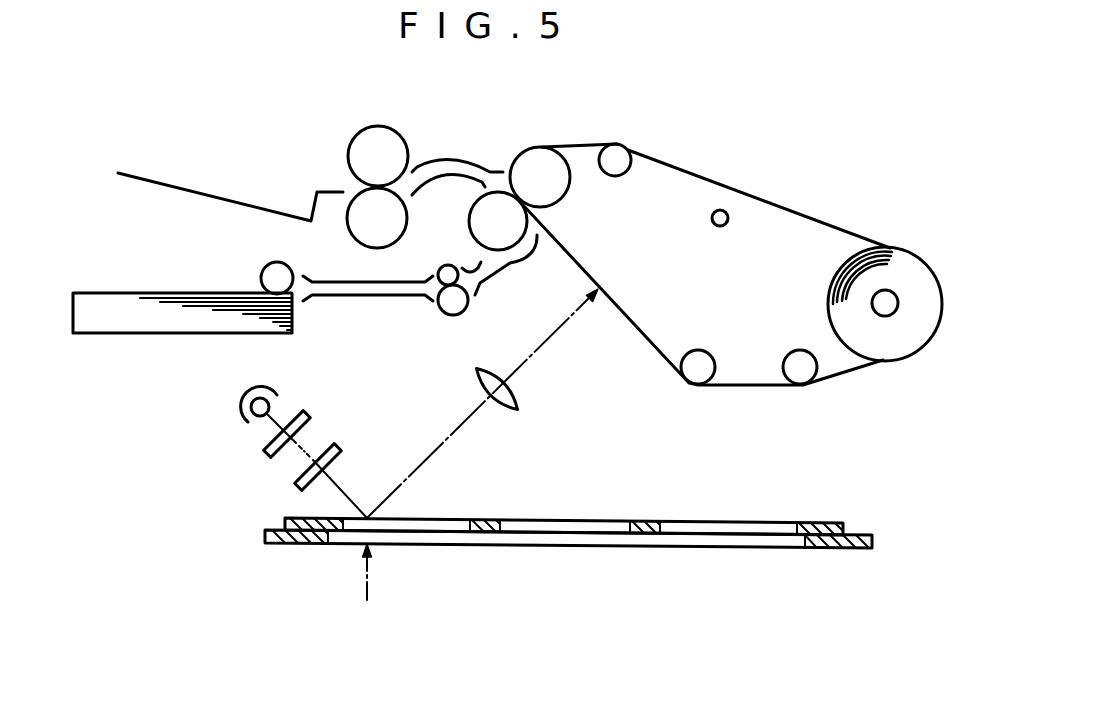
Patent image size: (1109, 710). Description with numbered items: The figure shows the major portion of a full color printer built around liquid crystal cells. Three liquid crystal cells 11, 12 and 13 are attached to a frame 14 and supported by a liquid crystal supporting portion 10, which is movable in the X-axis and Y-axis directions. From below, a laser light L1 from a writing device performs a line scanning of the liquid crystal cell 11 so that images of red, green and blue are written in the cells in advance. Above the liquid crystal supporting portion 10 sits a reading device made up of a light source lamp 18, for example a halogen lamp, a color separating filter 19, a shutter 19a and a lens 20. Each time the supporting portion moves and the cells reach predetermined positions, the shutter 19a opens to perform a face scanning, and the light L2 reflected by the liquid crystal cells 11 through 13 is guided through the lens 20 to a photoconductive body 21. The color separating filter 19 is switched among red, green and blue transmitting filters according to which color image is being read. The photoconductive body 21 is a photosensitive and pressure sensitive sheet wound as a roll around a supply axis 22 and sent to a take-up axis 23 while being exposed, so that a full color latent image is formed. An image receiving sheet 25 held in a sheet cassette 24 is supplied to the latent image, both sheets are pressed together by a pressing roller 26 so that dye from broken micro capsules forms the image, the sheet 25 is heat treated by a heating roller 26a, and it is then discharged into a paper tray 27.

The liquid crystal supporting portion 10 is at (856, 549).
The liquid crystal cell 11 is at (437, 517).
The liquid crystal cell 12 is at (587, 520).
The liquid crystal cell 13 is at (749, 522).
The frame 14 is at (815, 526).
The light source lamp 18 is at (273, 390).
The color separating filter 19 is at (306, 412).
The shutter 19a is at (336, 451).
The lens 20 is at (493, 367).
The photoconductive body 21 is at (638, 330).
The supply axis 22 is at (829, 293).
The take-up axis 23 is at (728, 219).
The sheet cassette 24 is at (168, 333).
The image receiving sheet 25 is at (138, 293).
The pressing roller 26 is at (567, 197).
The heating roller 26a is at (399, 134).
The paper tray 27 is at (120, 175).
The laser light L1 is at (368, 583).
The reflected light L2 is at (433, 452).